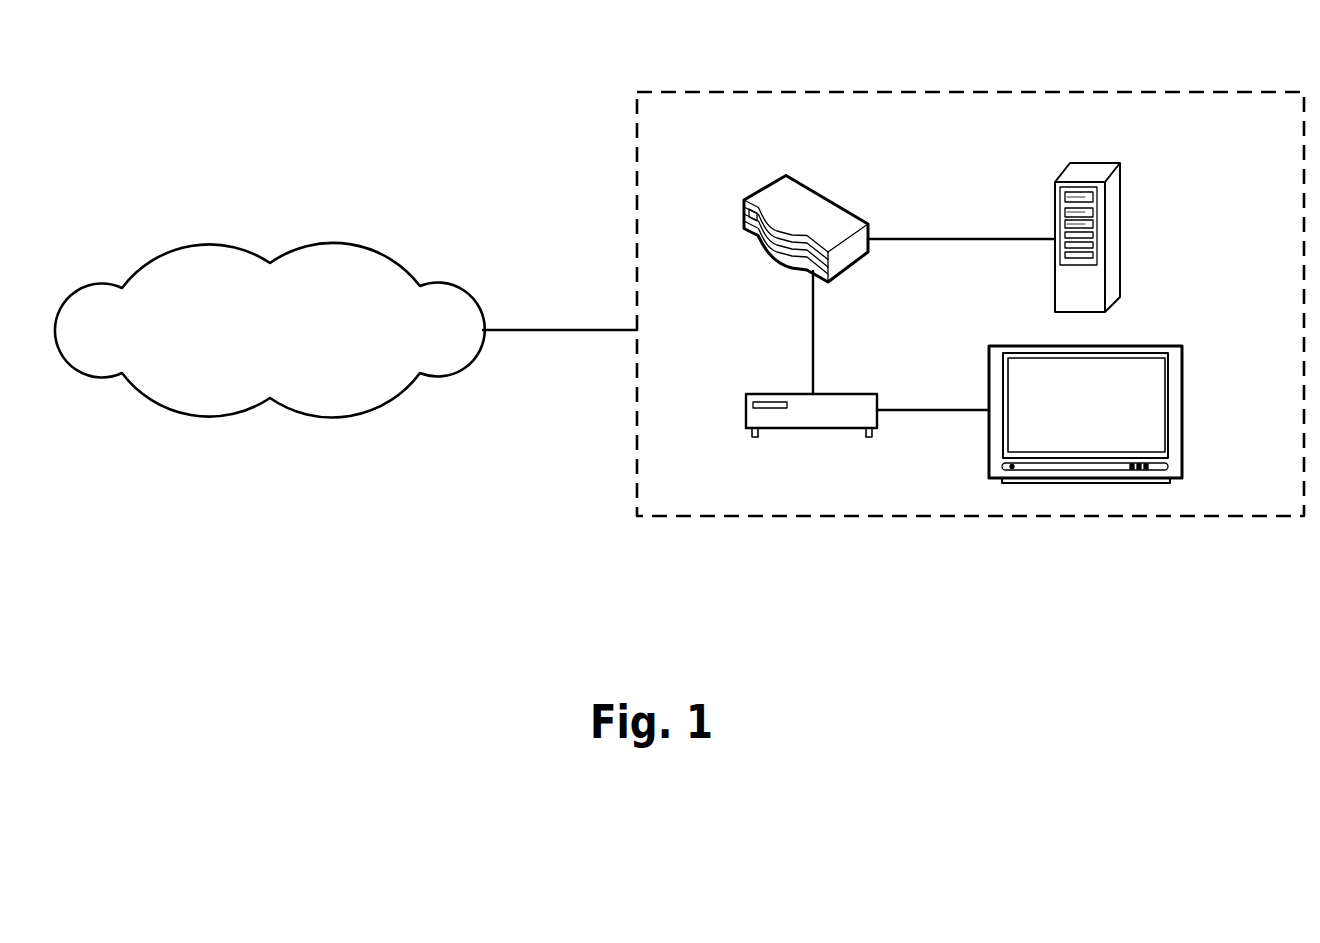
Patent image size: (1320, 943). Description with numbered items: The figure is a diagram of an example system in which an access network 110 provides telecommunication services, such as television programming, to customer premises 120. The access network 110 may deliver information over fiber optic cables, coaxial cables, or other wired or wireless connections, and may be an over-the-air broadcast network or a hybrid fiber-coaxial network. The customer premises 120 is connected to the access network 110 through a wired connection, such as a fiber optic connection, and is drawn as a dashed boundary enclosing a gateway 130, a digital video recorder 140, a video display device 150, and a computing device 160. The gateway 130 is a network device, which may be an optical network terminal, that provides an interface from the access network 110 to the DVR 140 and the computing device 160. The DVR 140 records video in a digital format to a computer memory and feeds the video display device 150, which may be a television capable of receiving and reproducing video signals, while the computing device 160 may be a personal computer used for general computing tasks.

The access network 110 is at (252, 370).
The customer premises 120 is at (730, 93).
The gateway 130 is at (853, 219).
The digital video recorder (DVR) 140 is at (768, 393).
The video display device 150 is at (1188, 418).
The computing device 160 is at (1055, 187).